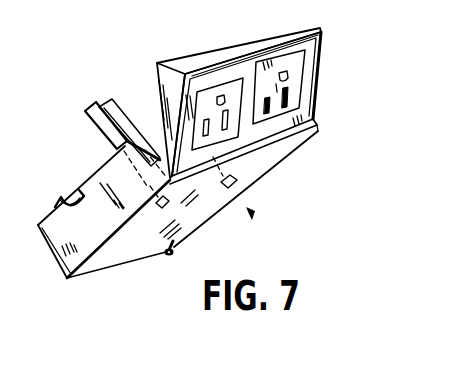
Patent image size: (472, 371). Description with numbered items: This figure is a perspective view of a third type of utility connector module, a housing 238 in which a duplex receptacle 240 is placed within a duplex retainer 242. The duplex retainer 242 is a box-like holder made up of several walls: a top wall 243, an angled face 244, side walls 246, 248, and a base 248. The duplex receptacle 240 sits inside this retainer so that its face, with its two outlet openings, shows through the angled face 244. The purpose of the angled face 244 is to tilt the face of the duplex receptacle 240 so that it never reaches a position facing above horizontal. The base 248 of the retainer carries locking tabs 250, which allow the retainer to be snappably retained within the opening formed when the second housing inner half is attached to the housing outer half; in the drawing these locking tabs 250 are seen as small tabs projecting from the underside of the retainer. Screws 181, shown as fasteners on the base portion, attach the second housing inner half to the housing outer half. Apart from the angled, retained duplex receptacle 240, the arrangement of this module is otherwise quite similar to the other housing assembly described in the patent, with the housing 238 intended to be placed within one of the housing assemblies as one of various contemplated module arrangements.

The housing 238 is at (67, 77).
The duplex receptacle 240 is at (252, 48).
The duplex retainer 242 is at (211, 29).
The top wall 243 is at (195, 57).
The angled face 244 is at (312, 120).
The side wall 246 is at (158, 72).
The base 248 is at (320, 61).
The locking tabs 250 is at (135, 110).
The screws 181 is at (178, 254).